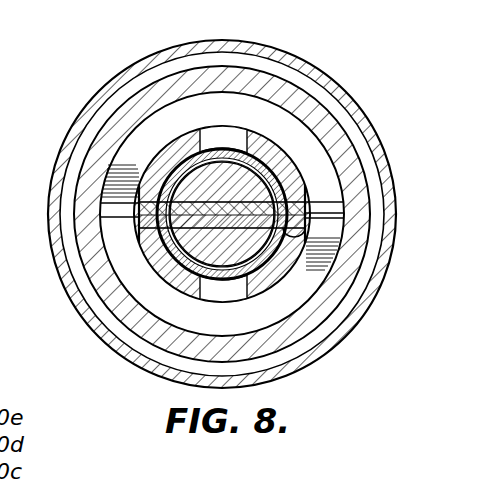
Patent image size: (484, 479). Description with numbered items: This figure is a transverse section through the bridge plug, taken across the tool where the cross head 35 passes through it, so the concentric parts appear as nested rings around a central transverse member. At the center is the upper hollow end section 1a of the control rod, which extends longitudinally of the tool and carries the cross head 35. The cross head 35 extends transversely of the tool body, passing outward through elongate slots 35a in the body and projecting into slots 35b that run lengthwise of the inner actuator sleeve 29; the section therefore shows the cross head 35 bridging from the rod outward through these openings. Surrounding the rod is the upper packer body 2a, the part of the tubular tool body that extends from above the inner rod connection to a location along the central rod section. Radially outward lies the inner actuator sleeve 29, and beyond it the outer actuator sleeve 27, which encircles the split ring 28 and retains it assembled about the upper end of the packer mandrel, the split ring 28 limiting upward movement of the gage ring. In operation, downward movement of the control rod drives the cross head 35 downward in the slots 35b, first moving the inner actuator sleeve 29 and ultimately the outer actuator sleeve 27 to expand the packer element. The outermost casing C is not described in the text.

The actuator sleeve 27 is at (247, 77).
The split ring 28 is at (147, 125).
The inner actuator sleeve 29 is at (262, 147).
The upper hollow end section 1a is at (158, 186).
The upper packer body 2a is at (170, 252).
The cross head 35 is at (137, 217).
The elongate slots 35a is at (307, 230).
The slots 35b is at (299, 203).
The outer casing C is at (326, 345).